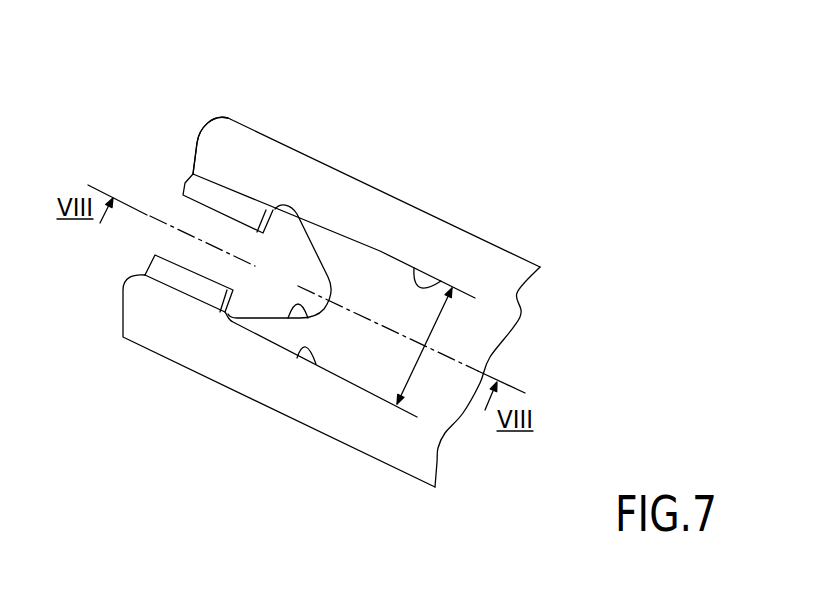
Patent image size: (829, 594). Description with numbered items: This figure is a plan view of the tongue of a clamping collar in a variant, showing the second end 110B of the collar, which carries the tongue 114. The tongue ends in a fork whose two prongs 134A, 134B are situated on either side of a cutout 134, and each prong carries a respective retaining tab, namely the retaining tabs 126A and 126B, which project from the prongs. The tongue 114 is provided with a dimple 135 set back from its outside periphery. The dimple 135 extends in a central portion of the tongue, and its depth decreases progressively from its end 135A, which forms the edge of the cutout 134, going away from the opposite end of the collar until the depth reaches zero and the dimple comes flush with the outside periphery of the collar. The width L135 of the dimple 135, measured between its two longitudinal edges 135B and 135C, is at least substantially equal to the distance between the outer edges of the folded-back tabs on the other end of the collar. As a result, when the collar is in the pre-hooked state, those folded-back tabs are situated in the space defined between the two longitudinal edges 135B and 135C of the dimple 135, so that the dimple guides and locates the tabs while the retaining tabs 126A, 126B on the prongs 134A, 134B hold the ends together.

The second end of the collar 110B is at (195, 128).
The first prong of the fork 134A is at (257, 152).
The tongue 114 is at (352, 195).
The first retaining tab 126A is at (197, 190).
The cutout 134 is at (292, 285).
The dimple 135 is at (353, 273).
The end of the dimple 135A is at (312, 316).
The first longitudinal edge of the dimple 135B is at (440, 281).
The second longitudinal edge of the dimple 135C is at (312, 348).
The width of the dimple L135 is at (432, 346).
The second retaining tab 126B is at (163, 270).
The second prong of the fork 134B is at (150, 316).